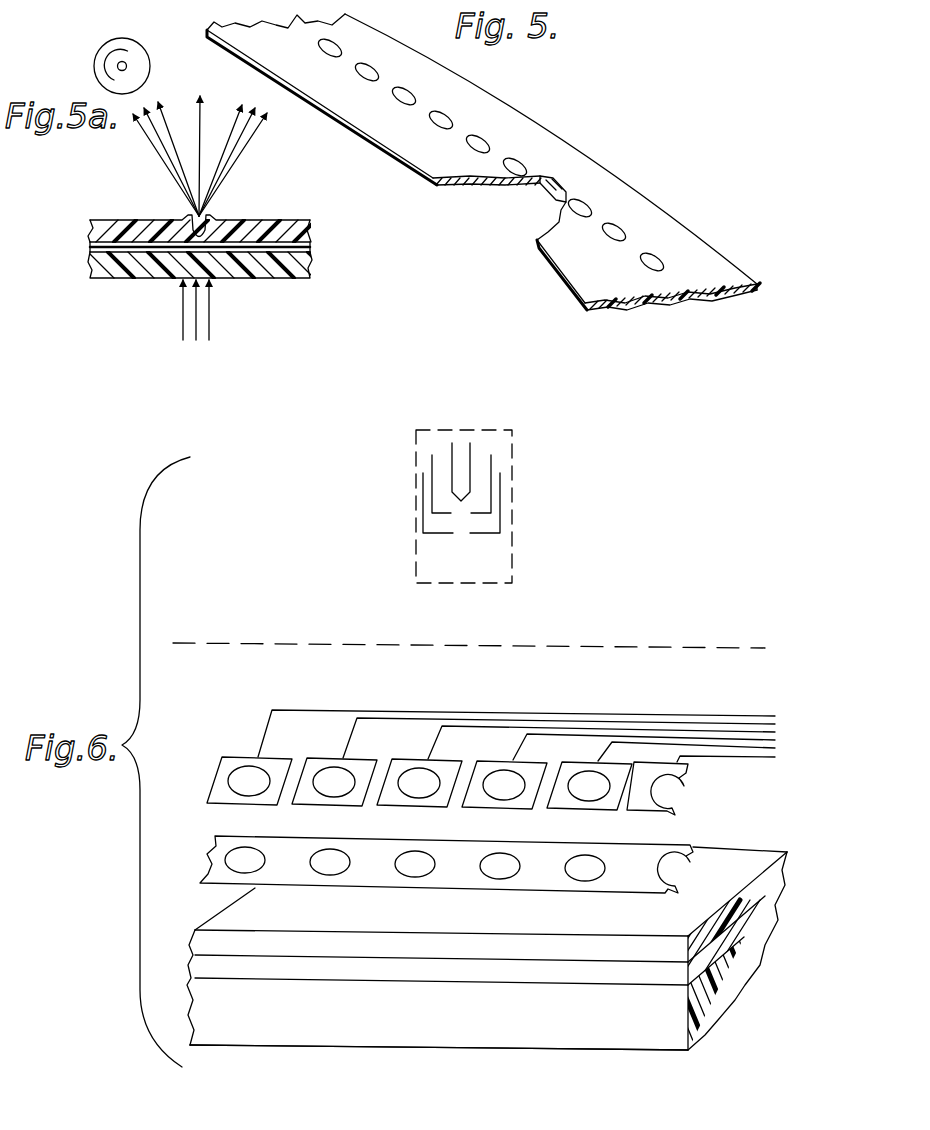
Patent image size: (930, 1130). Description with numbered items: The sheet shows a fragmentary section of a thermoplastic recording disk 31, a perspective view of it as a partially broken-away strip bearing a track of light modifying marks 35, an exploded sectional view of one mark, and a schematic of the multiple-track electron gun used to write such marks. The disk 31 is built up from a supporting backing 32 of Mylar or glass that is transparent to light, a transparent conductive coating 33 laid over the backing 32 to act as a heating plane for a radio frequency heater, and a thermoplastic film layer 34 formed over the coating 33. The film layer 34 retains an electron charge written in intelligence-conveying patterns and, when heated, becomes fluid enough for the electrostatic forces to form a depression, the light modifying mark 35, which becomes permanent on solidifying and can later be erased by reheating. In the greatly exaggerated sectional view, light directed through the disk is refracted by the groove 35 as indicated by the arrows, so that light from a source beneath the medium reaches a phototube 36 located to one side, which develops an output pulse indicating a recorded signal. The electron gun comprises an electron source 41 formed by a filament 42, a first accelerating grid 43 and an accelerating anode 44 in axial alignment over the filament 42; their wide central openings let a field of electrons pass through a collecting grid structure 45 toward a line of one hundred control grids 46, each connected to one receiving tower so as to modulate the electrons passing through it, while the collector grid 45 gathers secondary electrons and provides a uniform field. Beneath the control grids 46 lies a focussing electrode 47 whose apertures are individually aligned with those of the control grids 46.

In FIG. 5, the thermoplastic recording disk 31 is at (553, 135).
In FIG. 6, the thermoplastic recording disk 31 is at (553, 953).
In FIG. 5A, the supporting backing 32 is at (150, 262).
In FIG. 6, the supporting backing 32 is at (643, 1033).
In FIG. 5A, the transparent conductive coating 33 is at (105, 249).
In FIG. 6, the transparent conductive coating 33 is at (643, 972).
In FIG. 5A, the thermoplastic film layer 34 is at (133, 228).
In FIG. 6, the thermoplastic film layer 34 is at (735, 862).
In FIG. 5, the light modifying mark 35 is at (392, 97).
In FIG. 5A, the light modifying mark 35 is at (213, 228).
In FIG. 5A, the phototube 36 is at (95, 61).
In FIG. 6, the electron source 41 is at (513, 463).
In FIG. 6, the filament 42 is at (455, 497).
In FIG. 6, the first accelerating grid 43 is at (485, 514).
In FIG. 6, the accelerating anode 44 is at (487, 535).
In FIG. 6, the collecting grid structure 45 is at (651, 647).
In FIG. 6, the control grids 46 is at (233, 765).
In FIG. 6, the focussing electrode 47 is at (226, 845).